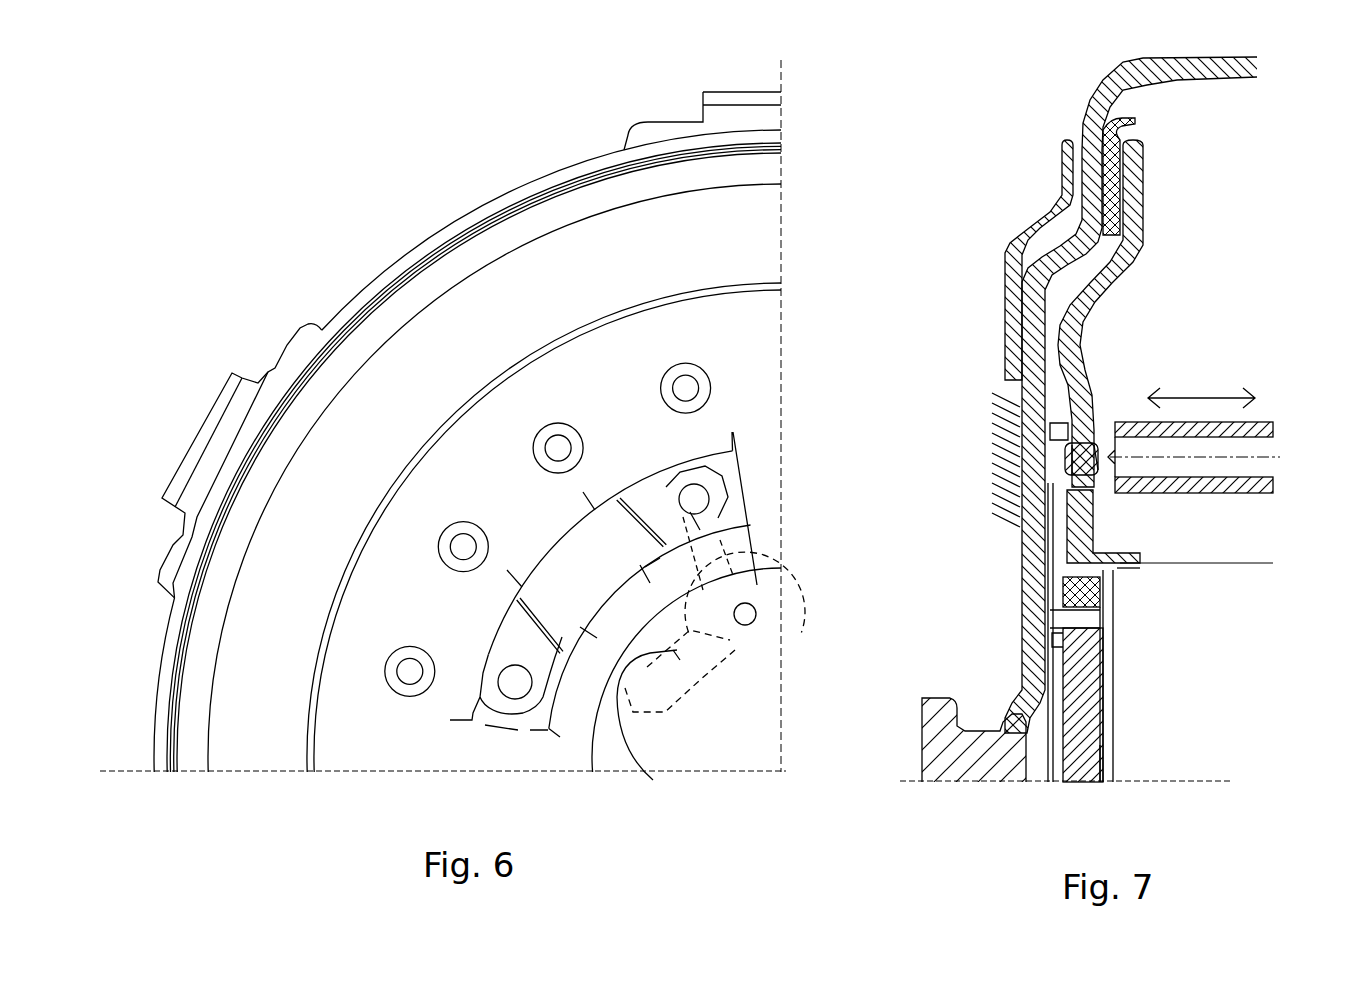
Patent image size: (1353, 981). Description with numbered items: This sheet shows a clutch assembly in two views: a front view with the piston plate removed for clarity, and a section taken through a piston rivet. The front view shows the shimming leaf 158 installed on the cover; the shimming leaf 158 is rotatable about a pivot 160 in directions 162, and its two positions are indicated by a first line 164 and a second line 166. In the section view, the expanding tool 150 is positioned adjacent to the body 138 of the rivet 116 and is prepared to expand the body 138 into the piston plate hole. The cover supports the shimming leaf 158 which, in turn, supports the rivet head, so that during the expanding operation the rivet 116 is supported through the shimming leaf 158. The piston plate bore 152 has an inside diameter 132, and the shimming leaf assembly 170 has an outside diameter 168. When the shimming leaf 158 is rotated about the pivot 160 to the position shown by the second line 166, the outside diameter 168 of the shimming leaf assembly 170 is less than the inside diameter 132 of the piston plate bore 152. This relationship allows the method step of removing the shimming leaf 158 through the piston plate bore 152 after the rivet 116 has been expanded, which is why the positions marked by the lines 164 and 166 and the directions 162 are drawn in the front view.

In FIG. 7, the rivet 116 is at (1085, 440).
In FIG. 7, the inside diameter 132 is at (1253, 568).
In FIG. 7, the body 138 is at (1090, 465).
In FIG. 7, the expanding tool 150 is at (1228, 490).
In FIG. 7, the piston plate bore 152 is at (1117, 568).
In FIG. 6, the shimming leaf 158 is at (735, 535).
In FIG. 7, the shimming leaf 158 is at (1008, 435).
In FIG. 6, the pivot 160 is at (757, 612).
In FIG. 6, the directions 162 is at (773, 552).
In FIG. 6, the line 164 is at (767, 547).
In FIG. 6, the line 166 is at (628, 738).
In FIG. 7, the outside diameter 168 is at (1208, 743).
In FIG. 7, the shimming leaf assembly 170 is at (1100, 745).